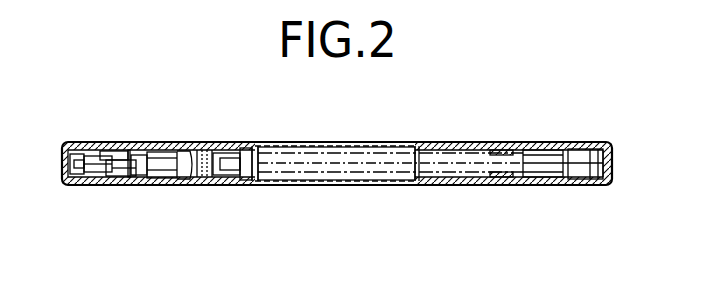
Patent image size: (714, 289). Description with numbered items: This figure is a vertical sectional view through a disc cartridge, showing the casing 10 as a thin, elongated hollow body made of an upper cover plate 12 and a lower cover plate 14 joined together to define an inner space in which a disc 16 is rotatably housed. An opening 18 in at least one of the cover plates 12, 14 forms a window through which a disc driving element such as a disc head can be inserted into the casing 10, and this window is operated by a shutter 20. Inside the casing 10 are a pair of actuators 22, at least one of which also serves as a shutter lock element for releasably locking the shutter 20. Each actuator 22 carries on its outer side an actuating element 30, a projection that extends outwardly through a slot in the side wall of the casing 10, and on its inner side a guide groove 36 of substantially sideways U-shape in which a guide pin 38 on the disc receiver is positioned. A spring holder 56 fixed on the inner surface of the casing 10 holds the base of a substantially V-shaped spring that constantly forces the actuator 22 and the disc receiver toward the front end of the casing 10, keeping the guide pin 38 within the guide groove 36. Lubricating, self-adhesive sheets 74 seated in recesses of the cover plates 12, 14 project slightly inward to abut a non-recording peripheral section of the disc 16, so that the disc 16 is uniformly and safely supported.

The casing 10 is at (618, 134).
The upper cover plate 12 is at (172, 141).
The lower cover plate 14 is at (163, 184).
The disc 16 is at (348, 178).
The opening 18 is at (334, 142).
The shutter 20 is at (396, 142).
The actuator 22 is at (127, 178).
The actuating element 30 is at (63, 162).
The guide groove 36 is at (100, 141).
The guide pin 38 is at (120, 141).
The spring holder 56 is at (210, 141).
The lubricating self-adhesive sheet 74 is at (505, 141).